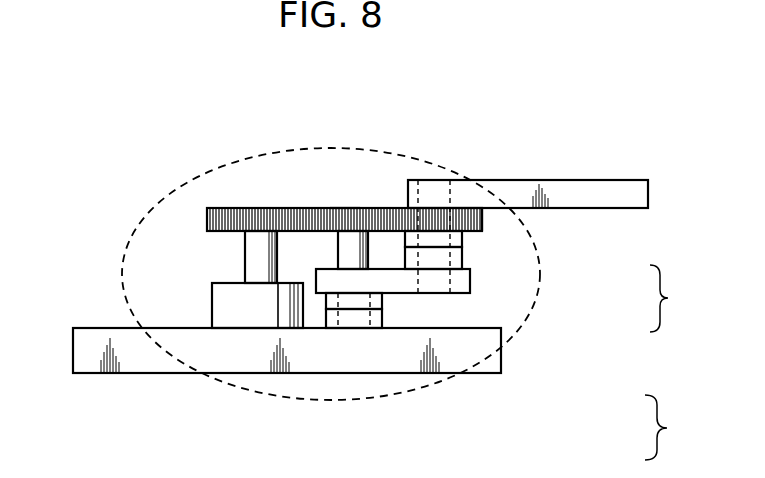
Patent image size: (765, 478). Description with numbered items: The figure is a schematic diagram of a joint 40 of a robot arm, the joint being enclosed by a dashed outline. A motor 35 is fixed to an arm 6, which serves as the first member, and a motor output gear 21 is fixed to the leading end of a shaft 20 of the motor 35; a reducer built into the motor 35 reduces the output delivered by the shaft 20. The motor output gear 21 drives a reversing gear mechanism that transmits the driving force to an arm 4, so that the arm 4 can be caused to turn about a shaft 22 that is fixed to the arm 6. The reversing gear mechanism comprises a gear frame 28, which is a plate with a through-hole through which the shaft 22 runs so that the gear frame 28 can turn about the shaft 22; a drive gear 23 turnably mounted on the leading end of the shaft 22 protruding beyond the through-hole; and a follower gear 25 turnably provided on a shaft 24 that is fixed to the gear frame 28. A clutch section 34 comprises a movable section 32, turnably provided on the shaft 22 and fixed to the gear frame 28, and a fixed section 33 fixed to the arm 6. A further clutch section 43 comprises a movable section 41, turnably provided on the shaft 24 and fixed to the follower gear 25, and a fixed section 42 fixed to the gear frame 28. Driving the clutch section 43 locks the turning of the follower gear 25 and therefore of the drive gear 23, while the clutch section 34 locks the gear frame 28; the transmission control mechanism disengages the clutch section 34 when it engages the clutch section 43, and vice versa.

The arm 4 is at (600, 182).
The arm (first member) 6 is at (128, 327).
The shaft 20 is at (257, 270).
The motor output gear 21 is at (262, 208).
The shaft 22 is at (353, 252).
The drive gear 23 is at (345, 208).
The shaft 24 is at (460, 177).
The follower gear (first follower gear) 25 is at (482, 218).
The gear frame 28 is at (470, 283).
The movable section 32 is at (382, 303).
The fixed section 33 is at (382, 313).
The clutch section 34 is at (676, 427).
The motor 35 is at (212, 305).
The joint 40 is at (317, 400).
The movable section 41 is at (463, 240).
The fixed section 42 is at (463, 257).
The clutch section 43 is at (679, 298).